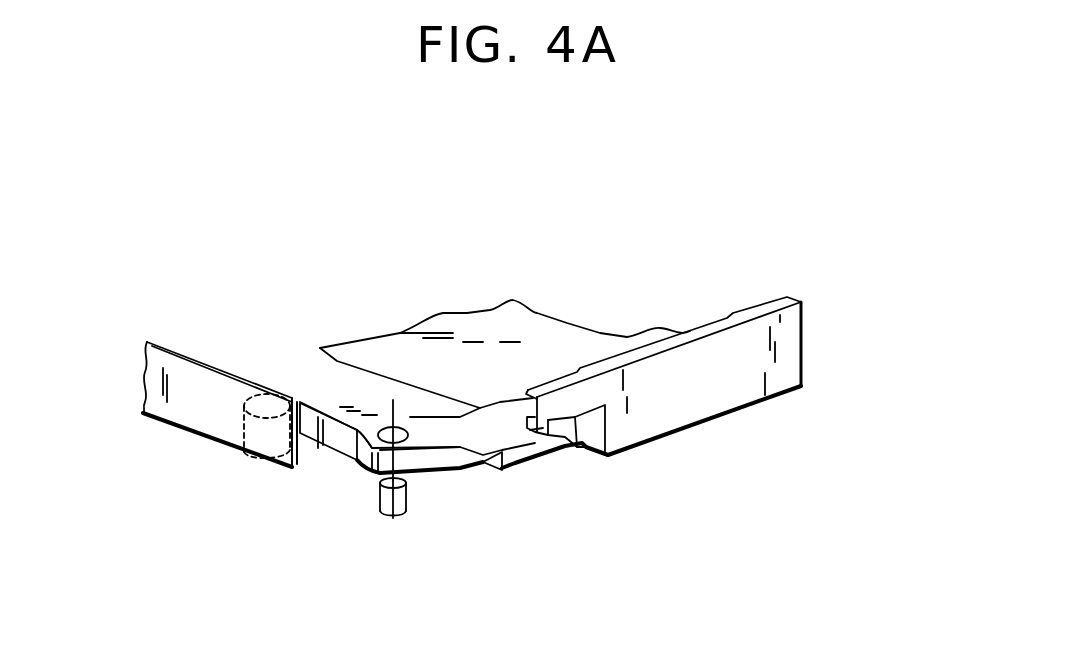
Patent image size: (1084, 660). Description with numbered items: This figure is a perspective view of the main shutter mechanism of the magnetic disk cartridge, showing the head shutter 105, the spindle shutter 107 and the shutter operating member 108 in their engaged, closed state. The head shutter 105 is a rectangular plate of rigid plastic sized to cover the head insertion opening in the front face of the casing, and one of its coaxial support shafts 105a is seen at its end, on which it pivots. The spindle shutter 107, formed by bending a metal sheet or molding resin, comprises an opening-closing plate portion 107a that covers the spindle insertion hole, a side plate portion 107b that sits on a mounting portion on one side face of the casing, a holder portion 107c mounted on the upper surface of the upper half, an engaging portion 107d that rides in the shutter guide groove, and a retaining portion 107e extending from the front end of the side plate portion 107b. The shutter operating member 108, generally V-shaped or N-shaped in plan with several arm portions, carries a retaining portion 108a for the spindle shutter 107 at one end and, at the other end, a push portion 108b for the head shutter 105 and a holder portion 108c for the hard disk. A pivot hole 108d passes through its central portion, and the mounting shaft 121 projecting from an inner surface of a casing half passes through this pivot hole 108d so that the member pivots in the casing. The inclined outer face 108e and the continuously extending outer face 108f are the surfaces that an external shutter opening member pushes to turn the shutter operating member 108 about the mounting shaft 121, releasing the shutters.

The head shutter 105 is at (190, 429).
The support shaft 105a is at (300, 386).
The spindle shutter 107 is at (633, 344).
The opening-closing plate portion 107a is at (523, 300).
The side plate portion 107b is at (788, 343).
The holder portion 107c is at (560, 372).
The engaging portion 107d is at (490, 347).
The retaining portion 107e is at (533, 447).
The shutter operating member 108 is at (433, 455).
The retaining portion 108a is at (550, 437).
The push portion 108b is at (277, 455).
The holder portion 108c is at (291, 397).
The pivot hole 108d is at (362, 462).
The inclined outer face 108e is at (417, 462).
The outer face 108f is at (470, 463).
The mounting shaft 121 is at (397, 518).